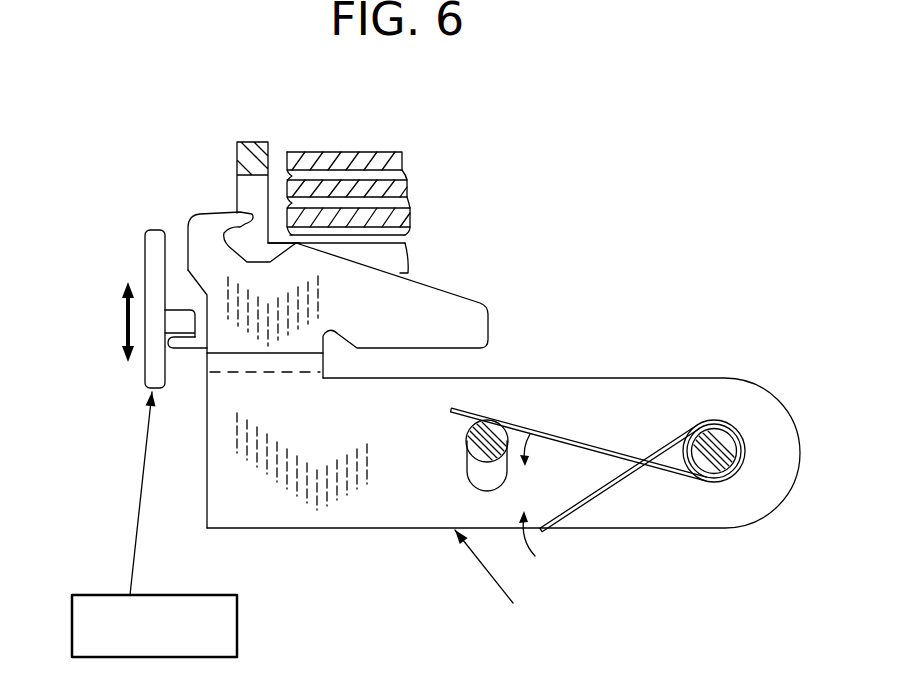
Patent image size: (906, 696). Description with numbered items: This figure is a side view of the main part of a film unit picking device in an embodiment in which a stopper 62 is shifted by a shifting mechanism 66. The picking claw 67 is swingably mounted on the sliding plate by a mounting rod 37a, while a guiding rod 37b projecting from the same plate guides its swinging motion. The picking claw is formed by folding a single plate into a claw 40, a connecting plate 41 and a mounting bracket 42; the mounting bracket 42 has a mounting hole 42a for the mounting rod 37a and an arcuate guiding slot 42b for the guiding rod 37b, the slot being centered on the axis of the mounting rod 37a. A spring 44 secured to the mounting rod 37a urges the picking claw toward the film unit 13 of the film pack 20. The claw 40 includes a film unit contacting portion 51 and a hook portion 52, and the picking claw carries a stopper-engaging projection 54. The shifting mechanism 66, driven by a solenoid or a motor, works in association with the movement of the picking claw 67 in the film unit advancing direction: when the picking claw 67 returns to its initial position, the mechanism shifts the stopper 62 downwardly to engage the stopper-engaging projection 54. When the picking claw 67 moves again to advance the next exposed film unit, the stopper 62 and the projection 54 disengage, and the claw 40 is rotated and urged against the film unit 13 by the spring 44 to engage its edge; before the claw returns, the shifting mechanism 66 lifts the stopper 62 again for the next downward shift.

The film unit 13 is at (396, 159).
The film pack 20 is at (245, 151).
The claw 40 is at (435, 310).
The connecting plate 41 is at (297, 365).
The mounting bracket 42 is at (552, 393).
The mounting hole 42a is at (718, 428).
The guiding slot 42b is at (477, 480).
The mounting rod 37a is at (714, 468).
The guiding rod 37b is at (472, 443).
The spring 44 is at (572, 513).
The film unit contacting portion 51 is at (298, 243).
The hook portion 52 is at (240, 210).
The stopper-engaging projection 54 is at (192, 342).
The stopper 62 is at (172, 323).
The shifting mechanism 66 is at (223, 608).
The picking claw 67 is at (495, 585).